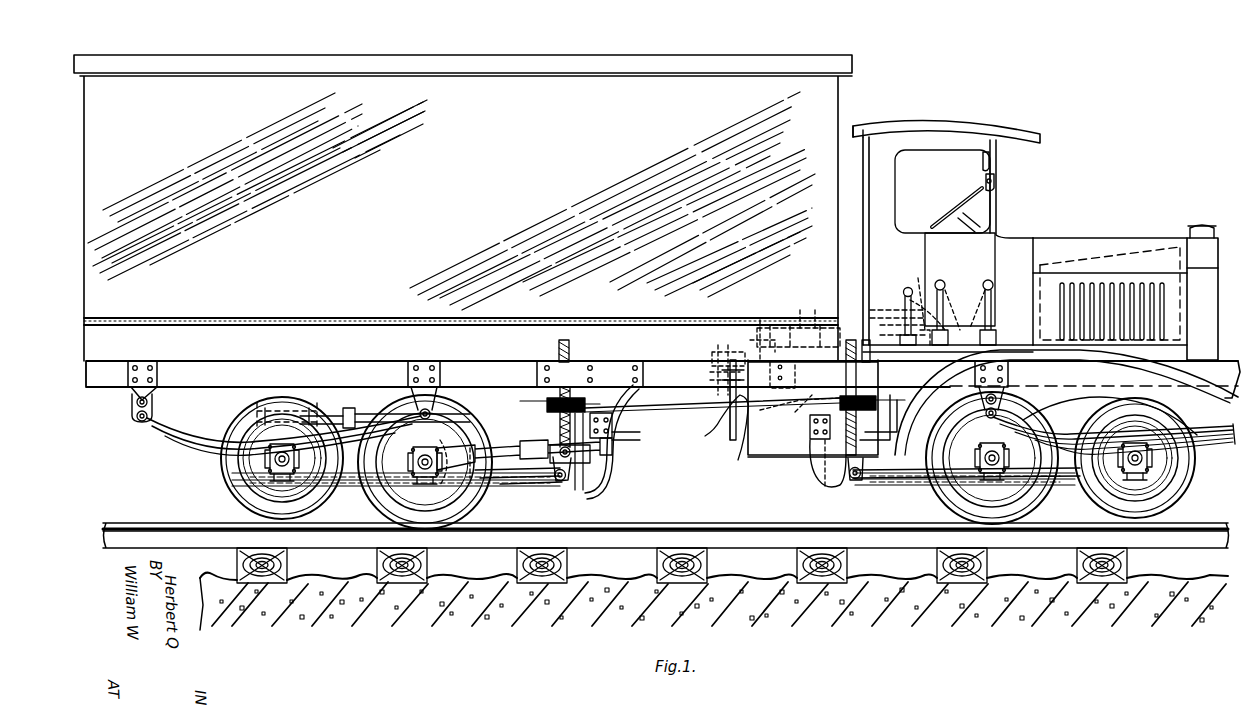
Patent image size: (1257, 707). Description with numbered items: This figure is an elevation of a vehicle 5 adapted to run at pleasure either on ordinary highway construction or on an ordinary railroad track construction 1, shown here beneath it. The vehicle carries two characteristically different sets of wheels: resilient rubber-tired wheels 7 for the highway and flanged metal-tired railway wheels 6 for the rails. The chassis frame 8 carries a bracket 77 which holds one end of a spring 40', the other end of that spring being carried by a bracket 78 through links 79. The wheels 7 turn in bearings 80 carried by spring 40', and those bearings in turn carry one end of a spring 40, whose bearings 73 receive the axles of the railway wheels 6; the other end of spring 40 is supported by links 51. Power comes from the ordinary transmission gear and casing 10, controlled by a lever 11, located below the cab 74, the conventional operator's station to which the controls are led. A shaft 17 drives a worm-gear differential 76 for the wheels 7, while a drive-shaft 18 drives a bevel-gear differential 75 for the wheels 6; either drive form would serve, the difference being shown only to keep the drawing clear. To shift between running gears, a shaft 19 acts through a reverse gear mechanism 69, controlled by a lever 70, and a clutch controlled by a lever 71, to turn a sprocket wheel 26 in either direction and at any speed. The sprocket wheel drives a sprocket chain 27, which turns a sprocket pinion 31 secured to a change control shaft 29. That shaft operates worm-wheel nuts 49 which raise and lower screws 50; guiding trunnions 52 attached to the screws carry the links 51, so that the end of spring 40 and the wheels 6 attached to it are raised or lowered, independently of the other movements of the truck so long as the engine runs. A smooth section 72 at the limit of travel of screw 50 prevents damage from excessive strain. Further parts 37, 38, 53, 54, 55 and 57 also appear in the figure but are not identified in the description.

The railroad track construction 1 is at (612, 523).
The vehicle 5 is at (463, 208).
The flanged railway wheels 6 is at (540, 488).
The resilient tired wheels 7 is at (218, 472).
The chassis frame 8 is at (300, 380).
The transmission gear and casing 10 is at (1003, 355).
The lever 11 is at (983, 285).
The shaft 17 is at (373, 404).
The drive-shaft 18 is at (547, 434).
The shaft 19 is at (814, 328).
The sprocket wheel 26 is at (740, 350).
The sprocket chain 27 is at (731, 436).
The shaft 29 is at (630, 404).
The sprocket pinion 31 is at (738, 450).
The bracket plate 37 is at (614, 428).
The bracket 38 is at (605, 375).
The spring 40 is at (855, 457).
The spring 40' is at (280, 438).
The worm-wheel nuts 49 is at (535, 396).
The screws 50 is at (620, 446).
The links 51 is at (606, 487).
The guiding trunnions 52 is at (590, 458).
The link 53 is at (590, 472).
The windshield fitting 54 is at (992, 160).
The bracket 55 is at (1000, 184).
The steering wheel 57 is at (980, 187).
The reverse gear mechanism 69 is at (762, 320).
The lever 70 is at (905, 290).
The lever 71 is at (918, 278).
The smooth section 72 is at (558, 350).
The bearings 73 is at (412, 462).
The cab 74 is at (946, 236).
The differential 75 is at (440, 448).
The differential 76 is at (268, 405).
The bracket 77 is at (436, 365).
The bracket 78 is at (150, 361).
The links 79 is at (136, 418).
The bearings 80 is at (262, 470).